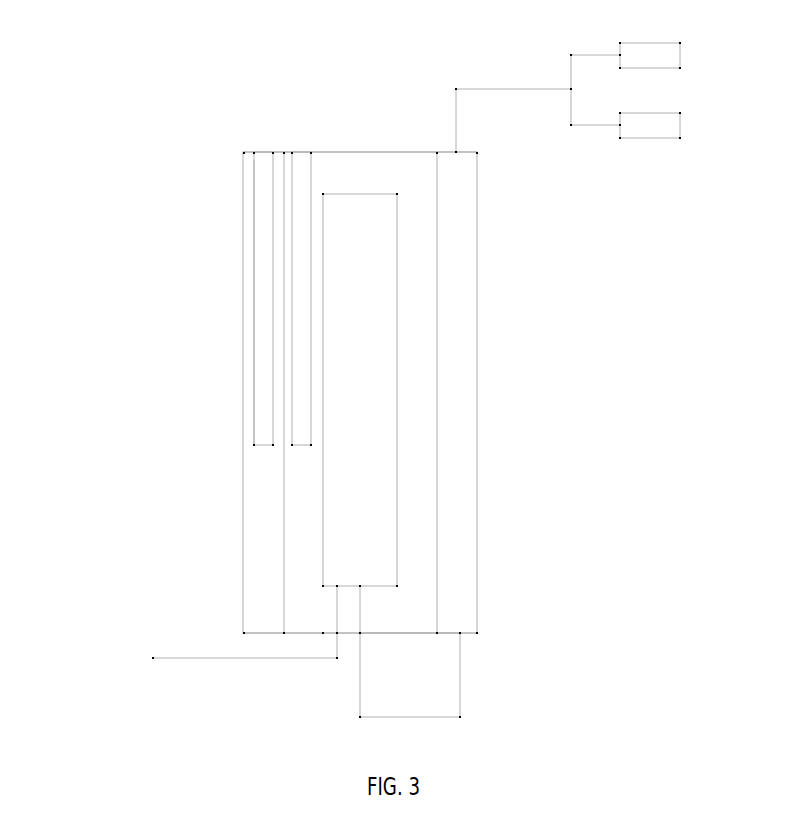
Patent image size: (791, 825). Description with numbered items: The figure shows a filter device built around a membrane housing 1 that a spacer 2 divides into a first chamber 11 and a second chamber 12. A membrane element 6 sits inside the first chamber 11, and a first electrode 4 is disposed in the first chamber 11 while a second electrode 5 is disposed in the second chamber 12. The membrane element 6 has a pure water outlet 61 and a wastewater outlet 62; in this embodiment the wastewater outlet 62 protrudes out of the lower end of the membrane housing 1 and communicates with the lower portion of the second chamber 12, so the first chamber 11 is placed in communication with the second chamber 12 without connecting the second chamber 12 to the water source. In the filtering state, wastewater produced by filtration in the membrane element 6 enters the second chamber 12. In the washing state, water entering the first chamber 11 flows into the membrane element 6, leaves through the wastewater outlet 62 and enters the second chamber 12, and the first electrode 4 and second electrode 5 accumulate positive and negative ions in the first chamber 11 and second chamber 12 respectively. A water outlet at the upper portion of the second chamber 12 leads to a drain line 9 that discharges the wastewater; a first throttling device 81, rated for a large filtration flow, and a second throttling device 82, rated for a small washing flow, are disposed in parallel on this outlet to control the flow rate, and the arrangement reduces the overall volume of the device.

The membrane housing 1 is at (478, 554).
The first chamber 11 is at (344, 167).
The second chamber 12 is at (468, 602).
The spacer 2 is at (282, 524).
The first electrode 4 is at (295, 253).
The second electrode 5 is at (261, 366).
The membrane element 6 is at (387, 241).
The pure water outlet 61 is at (178, 659).
The wastewater outlet 62 is at (358, 673).
The drain line 9 is at (499, 87).
The first throttling device 81 is at (677, 52).
The second throttling device 82 is at (673, 122).